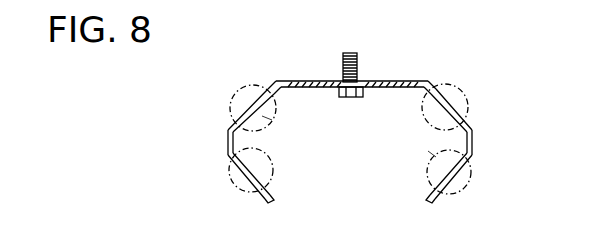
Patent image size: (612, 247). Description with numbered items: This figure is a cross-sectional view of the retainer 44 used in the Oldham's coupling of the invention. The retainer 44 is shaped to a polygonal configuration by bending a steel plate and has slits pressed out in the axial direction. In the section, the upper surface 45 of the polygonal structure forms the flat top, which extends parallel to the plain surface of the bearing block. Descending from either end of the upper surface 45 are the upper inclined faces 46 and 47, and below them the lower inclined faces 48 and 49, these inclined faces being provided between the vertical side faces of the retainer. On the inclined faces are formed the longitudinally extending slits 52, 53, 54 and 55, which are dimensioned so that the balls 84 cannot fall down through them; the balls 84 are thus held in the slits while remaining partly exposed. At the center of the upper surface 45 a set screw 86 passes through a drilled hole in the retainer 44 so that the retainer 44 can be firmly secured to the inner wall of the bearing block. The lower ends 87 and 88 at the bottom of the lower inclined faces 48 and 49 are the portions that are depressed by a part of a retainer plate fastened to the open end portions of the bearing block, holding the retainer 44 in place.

The retainer 44 is at (374, 82).
The upper surface 45 is at (318, 82).
The upper inclined face 46 is at (270, 86).
The upper inclined face 47 is at (430, 85).
The lower inclined face 48 is at (230, 161).
The lower inclined face 49 is at (470, 157).
The longitudinally extending slit 52 is at (251, 108).
The longitudinally extending slit 53 is at (238, 188).
The longitudinally extending slit 54 is at (444, 105).
The longitudinally extending slit 55 is at (463, 183).
The ball 84 is at (270, 118).
The set screw 86 is at (350, 98).
The lower end 87 is at (273, 200).
The lower end 88 is at (428, 198).